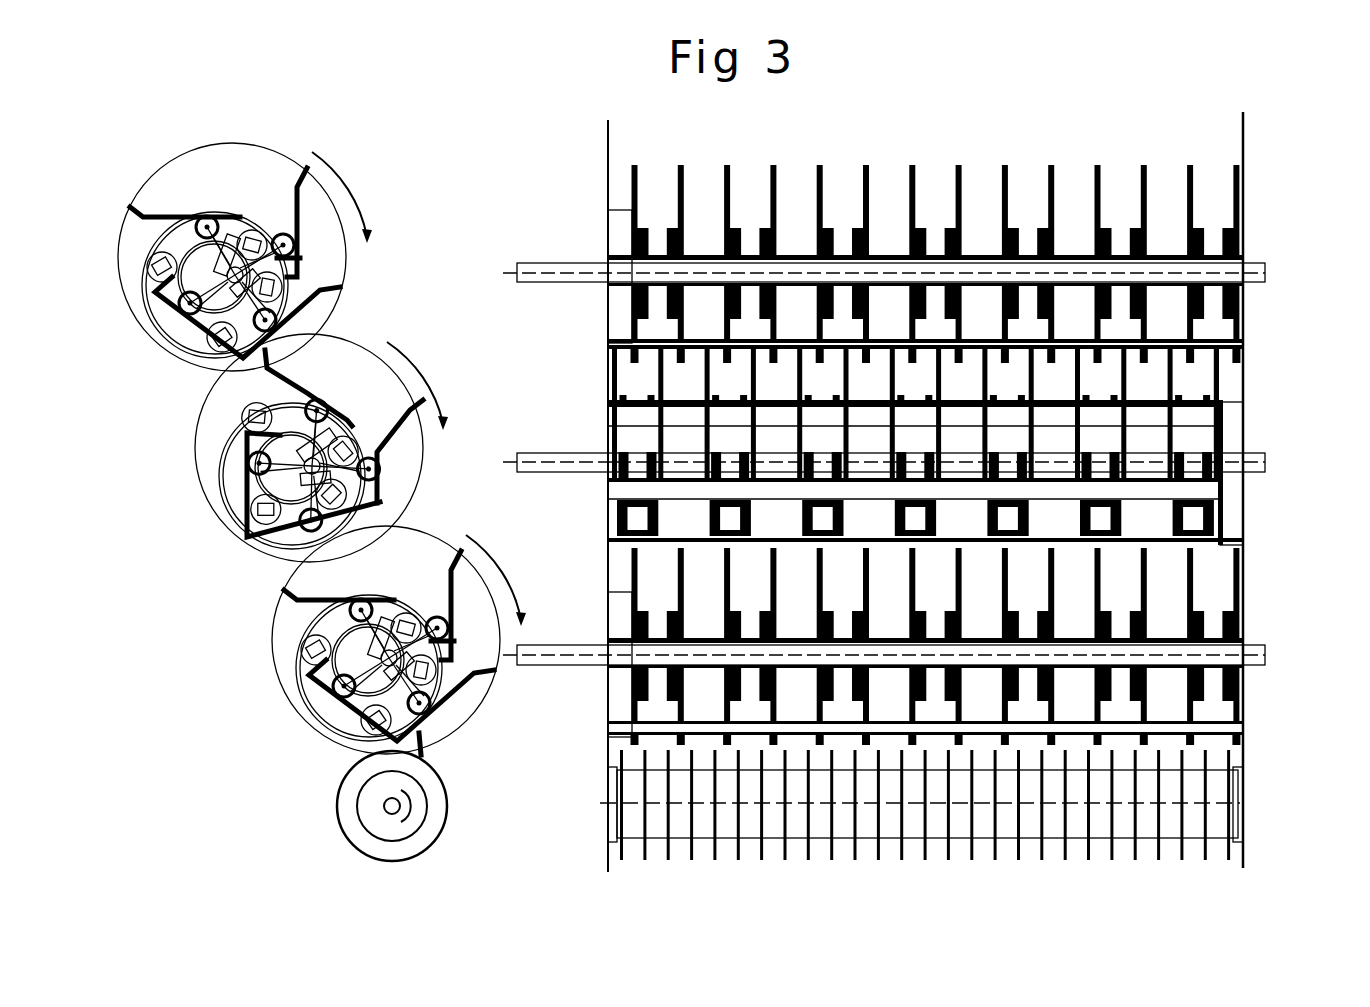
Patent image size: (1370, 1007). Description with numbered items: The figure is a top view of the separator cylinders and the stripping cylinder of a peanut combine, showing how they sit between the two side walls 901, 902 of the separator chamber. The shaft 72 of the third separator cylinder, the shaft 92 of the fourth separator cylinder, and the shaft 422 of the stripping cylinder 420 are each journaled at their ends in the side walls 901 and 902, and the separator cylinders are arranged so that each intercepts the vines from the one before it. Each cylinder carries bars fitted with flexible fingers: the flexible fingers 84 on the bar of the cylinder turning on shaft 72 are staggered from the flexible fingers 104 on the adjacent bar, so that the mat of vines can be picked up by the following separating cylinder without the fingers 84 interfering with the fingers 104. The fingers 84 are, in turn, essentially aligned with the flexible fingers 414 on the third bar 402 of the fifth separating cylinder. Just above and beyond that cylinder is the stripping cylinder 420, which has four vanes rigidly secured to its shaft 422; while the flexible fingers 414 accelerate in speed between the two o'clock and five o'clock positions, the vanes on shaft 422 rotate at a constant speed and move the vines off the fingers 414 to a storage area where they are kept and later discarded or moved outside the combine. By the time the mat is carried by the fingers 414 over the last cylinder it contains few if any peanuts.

The shaft 72 is at (538, 262).
The flexible fingers 84 is at (295, 210).
The shaft 92 is at (541, 453).
The flexible fingers 104 is at (685, 385).
The third bar 402 is at (545, 645).
The flexible fingers 414 is at (685, 603).
The stripping cylinder 420 is at (447, 785).
The shaft 422 is at (605, 798).
The side wall 901 is at (607, 167).
The side wall 902 is at (1243, 138).